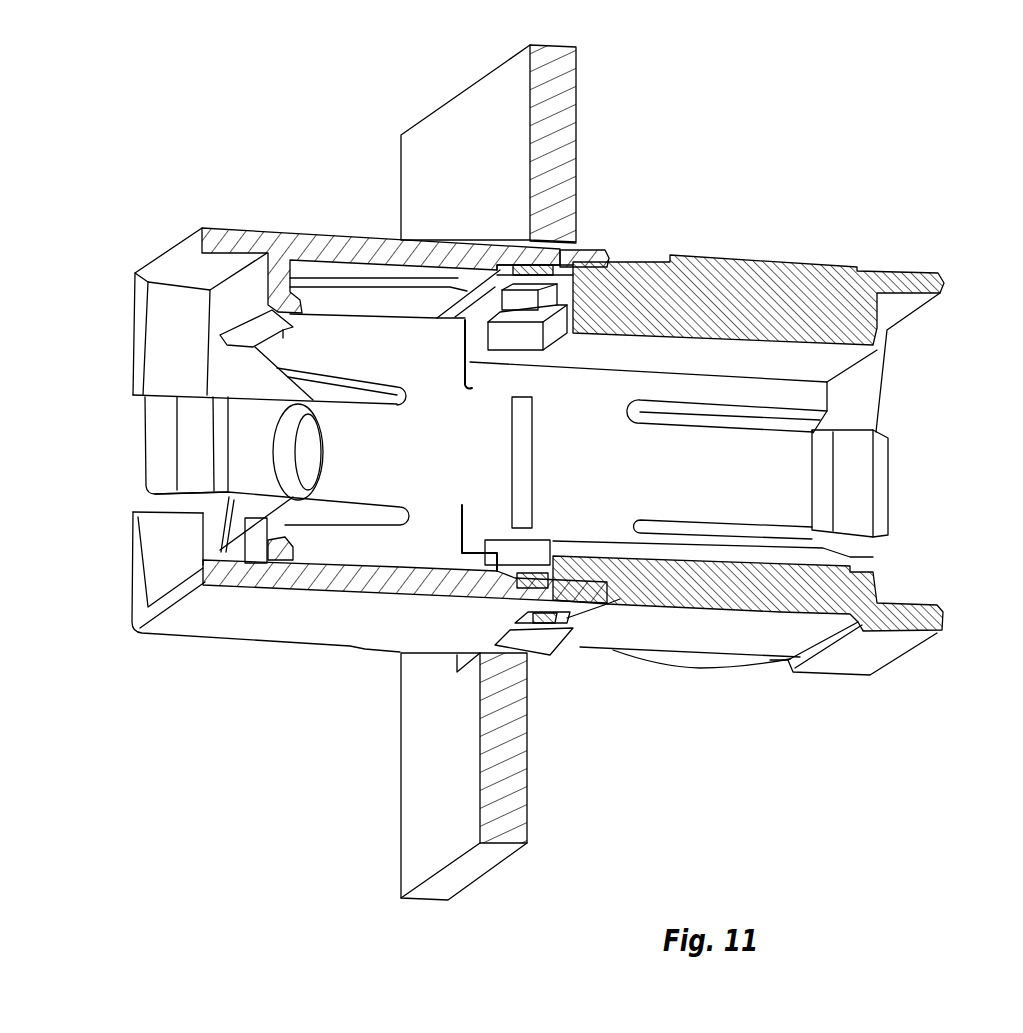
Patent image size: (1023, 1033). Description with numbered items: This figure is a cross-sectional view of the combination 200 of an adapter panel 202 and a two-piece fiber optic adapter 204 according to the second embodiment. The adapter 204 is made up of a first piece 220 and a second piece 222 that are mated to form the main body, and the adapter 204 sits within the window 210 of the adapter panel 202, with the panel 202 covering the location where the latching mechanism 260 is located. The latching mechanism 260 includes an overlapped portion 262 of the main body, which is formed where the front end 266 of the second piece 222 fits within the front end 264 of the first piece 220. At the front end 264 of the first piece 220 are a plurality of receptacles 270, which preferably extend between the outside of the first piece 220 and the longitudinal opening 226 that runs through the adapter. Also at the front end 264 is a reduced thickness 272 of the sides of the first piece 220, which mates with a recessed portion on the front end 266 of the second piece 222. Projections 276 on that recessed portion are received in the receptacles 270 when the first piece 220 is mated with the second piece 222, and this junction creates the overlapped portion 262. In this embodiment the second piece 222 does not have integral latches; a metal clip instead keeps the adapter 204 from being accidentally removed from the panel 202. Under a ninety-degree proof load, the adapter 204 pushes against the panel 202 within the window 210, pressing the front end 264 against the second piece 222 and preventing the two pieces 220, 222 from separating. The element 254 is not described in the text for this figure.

The combination 200 is at (826, 122).
The adapter panel 202 is at (578, 80).
The two-piece fiber optic adapter 204 is at (740, 684).
The window 210 is at (550, 246).
The first piece 220 is at (130, 589).
The second piece 222 is at (896, 668).
The longitudinal opening 226 is at (428, 490).
The bottom wall 254 is at (267, 640).
The latching mechanism 260 is at (582, 625).
The overlapped portion 262 is at (585, 570).
The front end of the first piece 264 is at (543, 547).
The front end of the second piece 266 is at (636, 232).
The receptacles 270 is at (527, 620).
The reduced thickness 272 is at (596, 258).
The projections 276 is at (563, 633).